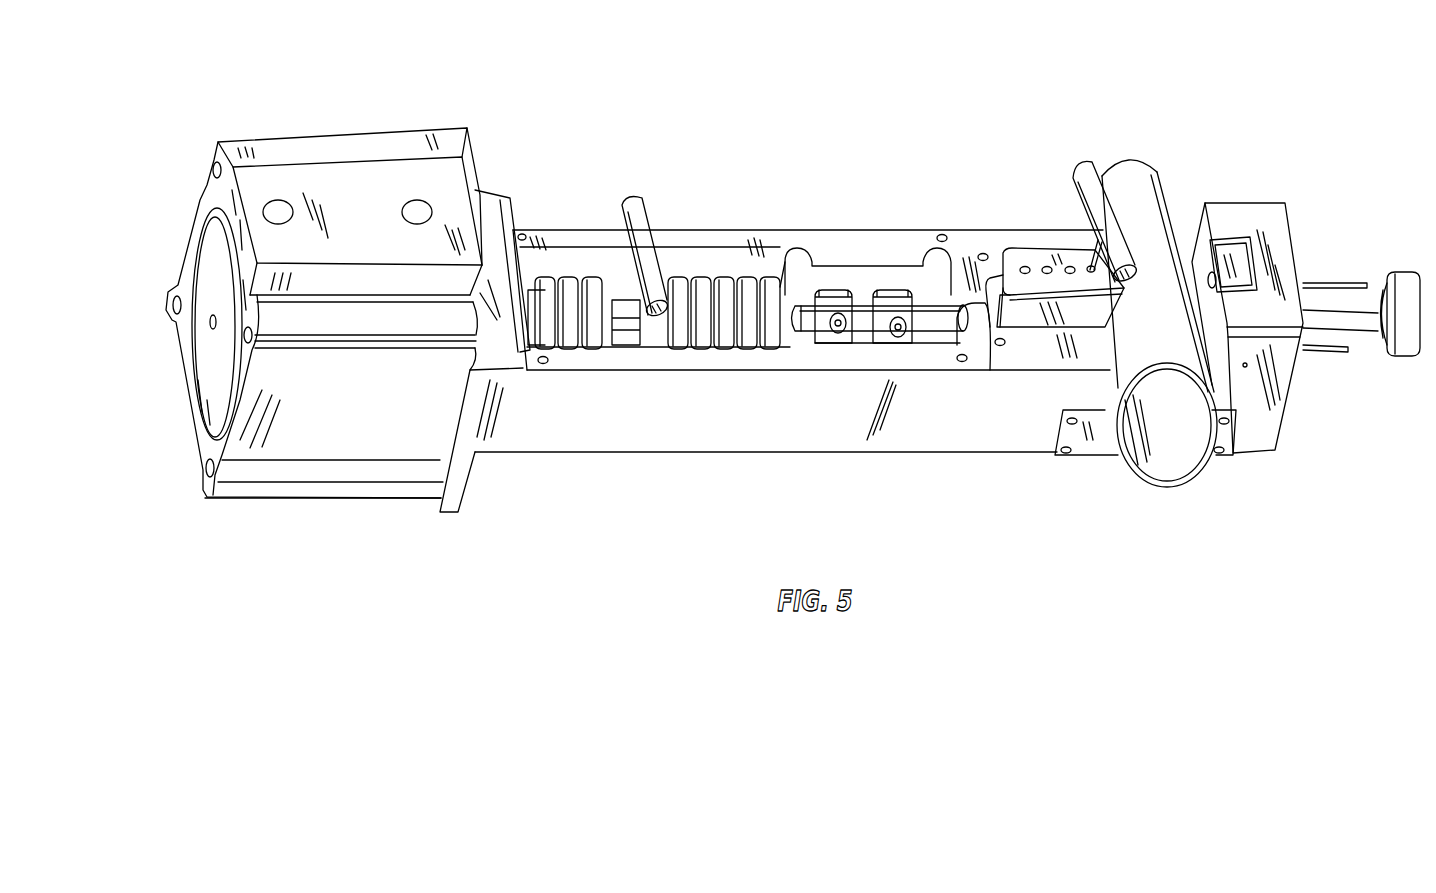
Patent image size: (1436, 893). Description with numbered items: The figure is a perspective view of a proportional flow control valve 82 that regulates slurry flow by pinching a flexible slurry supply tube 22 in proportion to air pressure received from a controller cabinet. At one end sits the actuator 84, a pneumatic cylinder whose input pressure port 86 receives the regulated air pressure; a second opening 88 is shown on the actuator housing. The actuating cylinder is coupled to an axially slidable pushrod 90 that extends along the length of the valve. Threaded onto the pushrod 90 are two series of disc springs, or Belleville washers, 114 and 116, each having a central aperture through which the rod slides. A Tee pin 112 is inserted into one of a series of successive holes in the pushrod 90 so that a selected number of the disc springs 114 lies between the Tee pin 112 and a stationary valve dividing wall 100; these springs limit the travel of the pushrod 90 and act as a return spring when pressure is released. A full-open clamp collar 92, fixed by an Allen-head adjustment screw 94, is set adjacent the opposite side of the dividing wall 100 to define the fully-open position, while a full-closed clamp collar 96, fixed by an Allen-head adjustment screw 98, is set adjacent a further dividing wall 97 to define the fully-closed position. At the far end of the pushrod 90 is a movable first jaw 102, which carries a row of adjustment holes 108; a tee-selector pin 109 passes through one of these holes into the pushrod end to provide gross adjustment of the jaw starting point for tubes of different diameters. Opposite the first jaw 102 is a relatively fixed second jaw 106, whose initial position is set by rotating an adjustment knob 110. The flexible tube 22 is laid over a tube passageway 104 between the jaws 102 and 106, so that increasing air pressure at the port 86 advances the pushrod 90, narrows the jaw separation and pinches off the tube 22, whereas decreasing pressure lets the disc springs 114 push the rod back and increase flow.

The proportional flow control valve 82 is at (650, 522).
The actuator 84 is at (360, 170).
The input pressure port 86 is at (278, 212).
The mounting hole 88 is at (417, 210).
The pushrod 90 is at (937, 310).
The full-open clamp collar 92 is at (830, 293).
The Allen-head adjustment screw 94 is at (838, 333).
The full-closed clamp collar 96 is at (893, 293).
The dividing wall 97 is at (967, 325).
The Allen-head adjustment screw 98 is at (897, 340).
The valve dividing wall 100 is at (798, 250).
The first jaw 102 is at (1076, 253).
The tube passageway 104 is at (1095, 445).
The second jaw 106 is at (1235, 258).
The adjustment holes 108 is at (1070, 267).
The tee-selector pin 109 is at (1088, 166).
The adjustment knob 110 is at (1400, 273).
The Tee pin 112 is at (640, 195).
The disc springs 114 is at (697, 280).
The disc springs 116 is at (542, 282).
The slurry supply tube 22 is at (1178, 467).